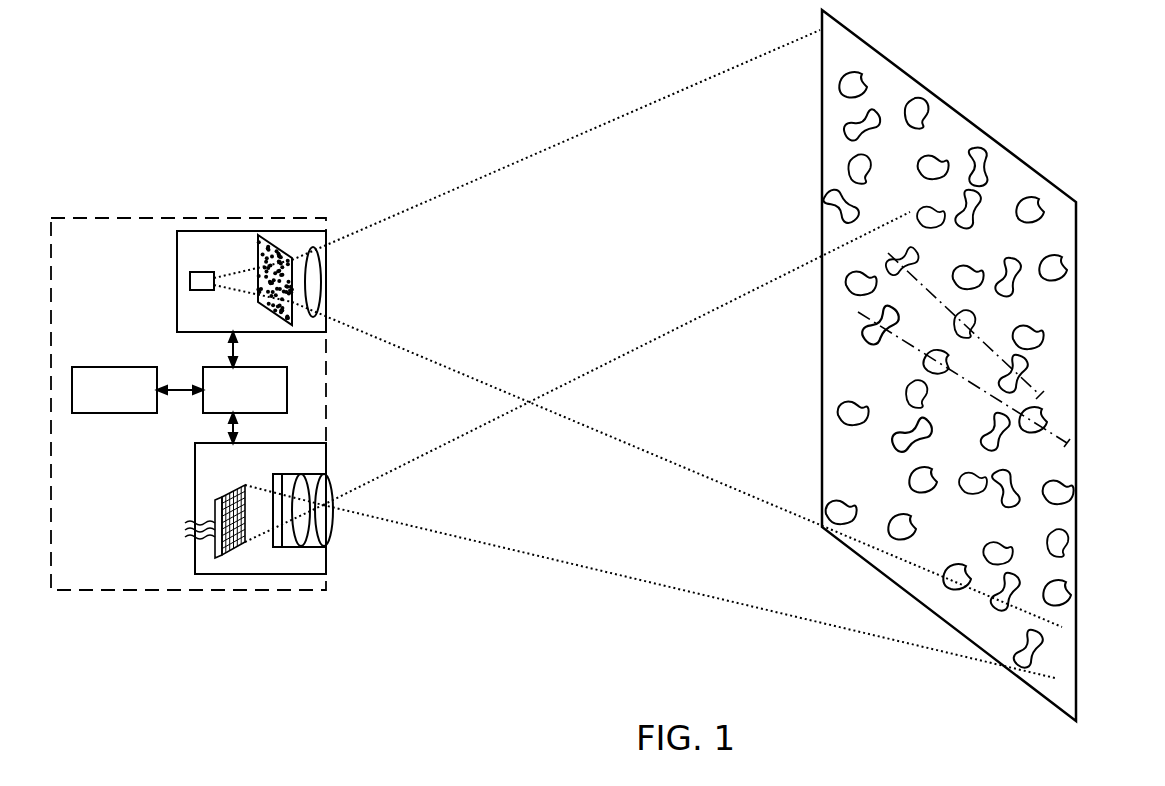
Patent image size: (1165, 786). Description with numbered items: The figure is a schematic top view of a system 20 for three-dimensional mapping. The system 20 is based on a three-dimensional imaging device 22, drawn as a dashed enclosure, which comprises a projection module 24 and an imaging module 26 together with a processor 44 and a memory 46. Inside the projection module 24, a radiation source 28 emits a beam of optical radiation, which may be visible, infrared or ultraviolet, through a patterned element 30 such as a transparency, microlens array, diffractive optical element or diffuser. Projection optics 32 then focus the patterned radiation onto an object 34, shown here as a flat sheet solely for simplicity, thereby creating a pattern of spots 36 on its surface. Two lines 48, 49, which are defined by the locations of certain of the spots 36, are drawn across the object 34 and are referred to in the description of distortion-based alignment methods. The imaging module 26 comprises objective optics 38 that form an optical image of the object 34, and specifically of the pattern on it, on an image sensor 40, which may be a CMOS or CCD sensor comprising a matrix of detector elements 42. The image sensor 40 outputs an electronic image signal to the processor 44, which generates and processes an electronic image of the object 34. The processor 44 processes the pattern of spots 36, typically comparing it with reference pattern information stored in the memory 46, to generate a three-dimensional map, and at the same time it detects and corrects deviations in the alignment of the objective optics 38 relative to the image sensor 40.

The system for 3D mapping 20 is at (984, 76).
The 3D imaging device 22 is at (212, 216).
The projection module 24 is at (317, 230).
The imaging module 26 is at (250, 574).
The radiation source 28 is at (190, 282).
The patterned element 30 is at (275, 246).
The projection optics 32 is at (321, 282).
The object 34 is at (1047, 178).
The spots 36 is at (866, 94).
The objective optics 38 is at (313, 548).
The image sensor 40 is at (215, 510).
The detector elements 42 is at (186, 530).
The processor 44 is at (287, 390).
The memory 46 is at (117, 367).
The line 48 is at (1068, 441).
The line 49 is at (1042, 393).